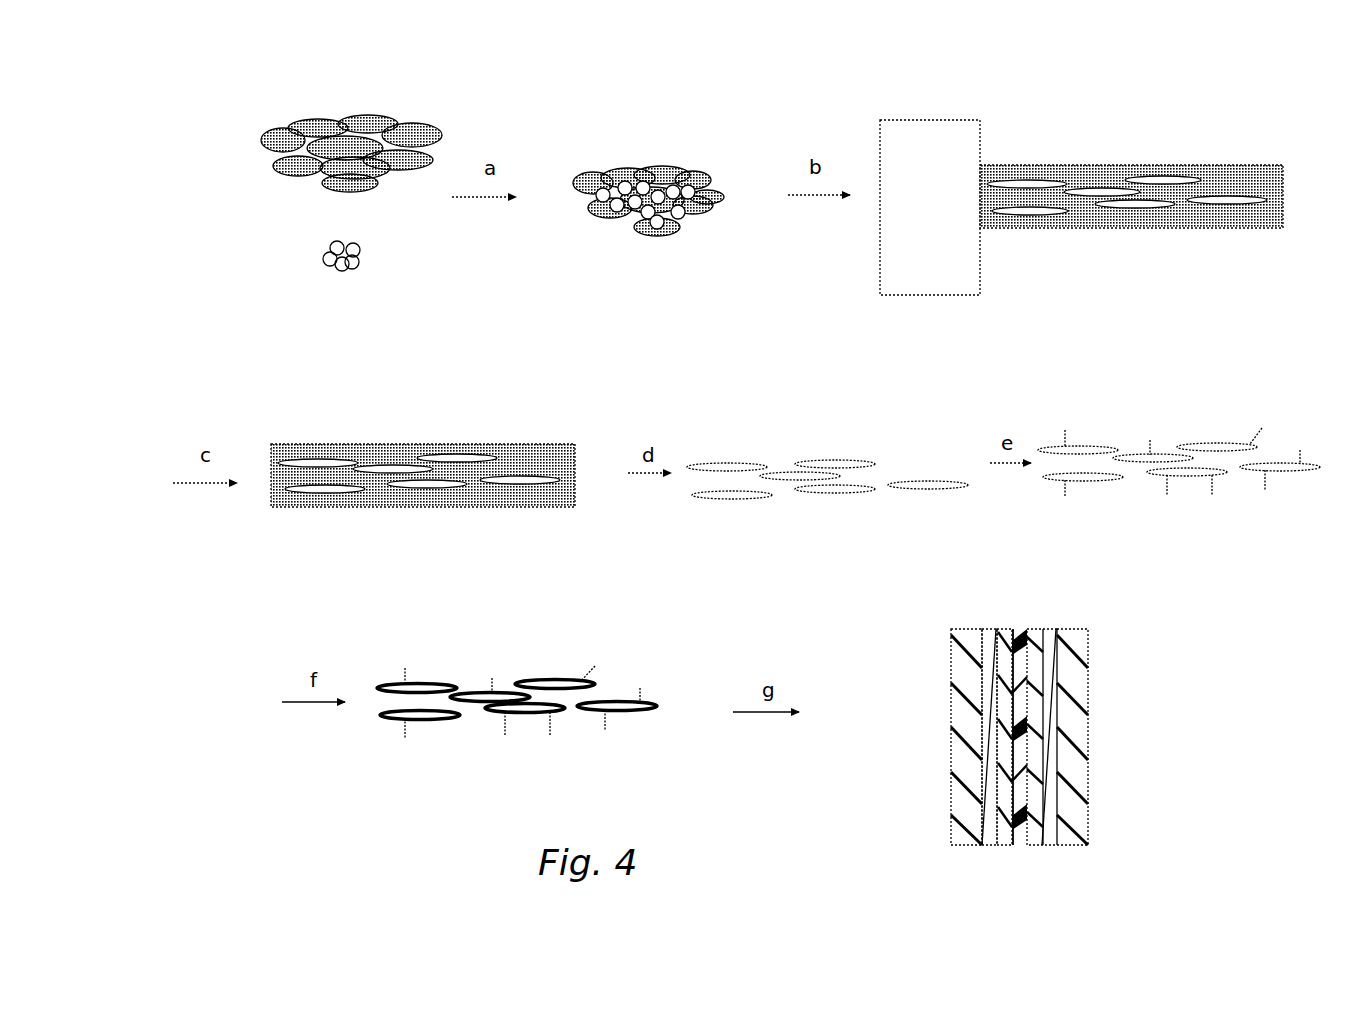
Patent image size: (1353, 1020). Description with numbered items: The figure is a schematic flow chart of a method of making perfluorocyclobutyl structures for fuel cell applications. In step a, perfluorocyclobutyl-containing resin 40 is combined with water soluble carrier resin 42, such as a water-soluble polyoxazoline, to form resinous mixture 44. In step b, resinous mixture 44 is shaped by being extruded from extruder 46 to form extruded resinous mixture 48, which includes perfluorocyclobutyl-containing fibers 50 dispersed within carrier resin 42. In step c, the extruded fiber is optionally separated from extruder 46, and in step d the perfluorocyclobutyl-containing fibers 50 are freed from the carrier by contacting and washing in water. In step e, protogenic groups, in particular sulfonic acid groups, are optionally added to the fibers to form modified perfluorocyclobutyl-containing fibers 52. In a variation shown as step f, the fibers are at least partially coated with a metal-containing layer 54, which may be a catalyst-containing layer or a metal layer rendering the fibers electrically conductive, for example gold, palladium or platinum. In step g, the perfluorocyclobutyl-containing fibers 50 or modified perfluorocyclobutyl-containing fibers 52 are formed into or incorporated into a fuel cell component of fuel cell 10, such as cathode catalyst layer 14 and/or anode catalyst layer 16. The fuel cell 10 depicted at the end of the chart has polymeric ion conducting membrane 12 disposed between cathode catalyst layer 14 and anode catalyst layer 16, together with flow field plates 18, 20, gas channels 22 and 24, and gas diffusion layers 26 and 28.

The proton exchange membrane fuel cell 10 is at (1006, 710).
The polymeric ion conducting membrane 12 is at (1020, 630).
The cathode catalyst layer 14 is at (1006, 630).
The anode catalyst layer 16 is at (1038, 630).
The flow field plate 18 is at (968, 630).
The flow field plate 20 is at (1070, 630).
The gas channels 22 is at (975, 658).
The gas channels 24 is at (1068, 644).
The gas diffusion layer 26 is at (990, 630).
The gas diffusion layer 28 is at (1050, 630).
The perfluorocyclobutyl-containing resin 40 is at (328, 258).
The water soluble carrier resin 42 is at (280, 146).
The resinous mixture 44 is at (660, 170).
The extruder 46 is at (884, 232).
The extruded resinous mixture 48 is at (1197, 91).
The perfluorocyclobutyl-containing fibers 50 is at (1166, 178).
The modified perfluorocyclobutyl-containing fibers 52 is at (1105, 448).
The metal-containing layer 54 is at (388, 686).